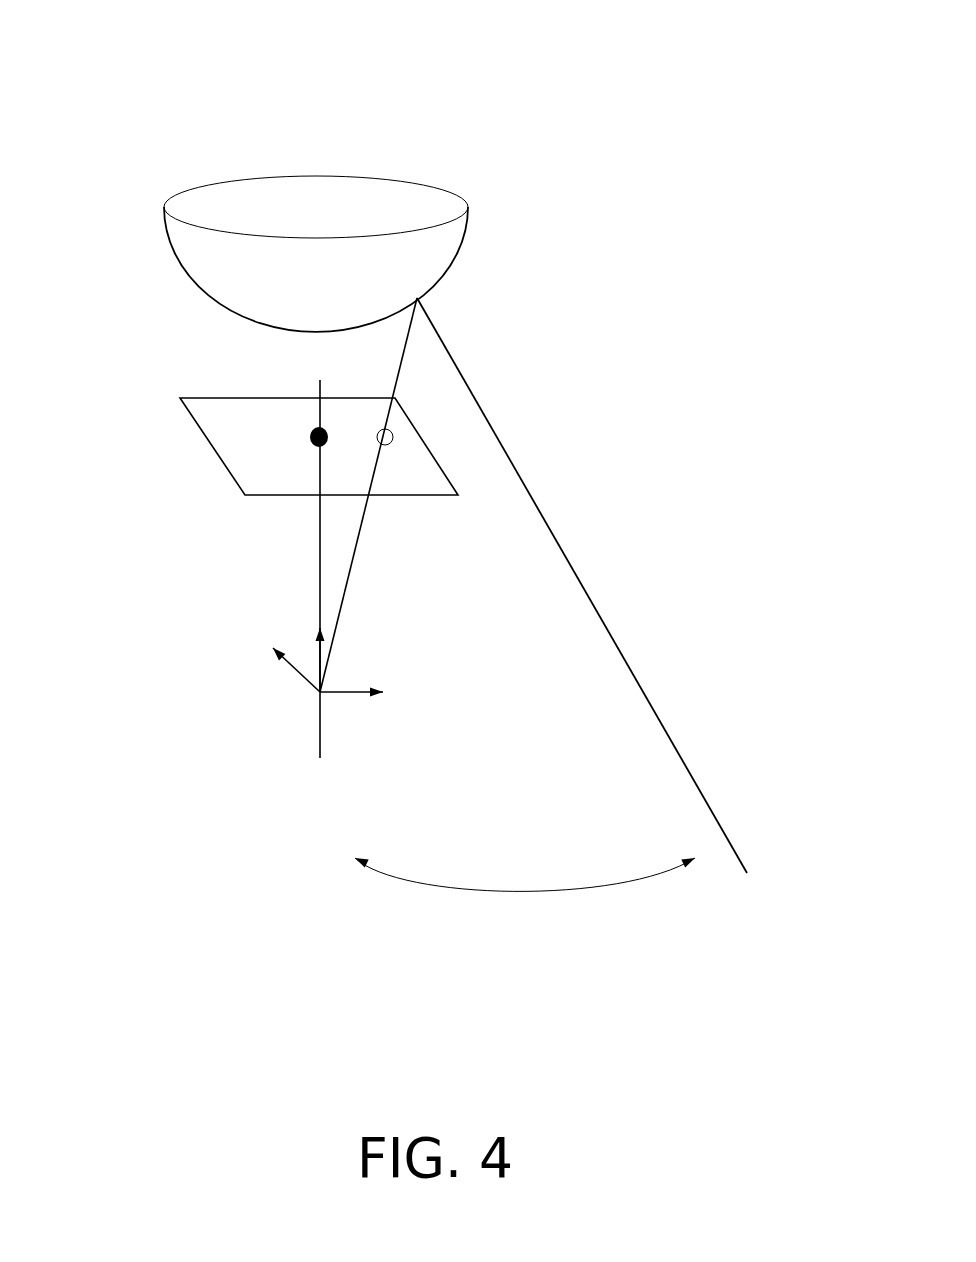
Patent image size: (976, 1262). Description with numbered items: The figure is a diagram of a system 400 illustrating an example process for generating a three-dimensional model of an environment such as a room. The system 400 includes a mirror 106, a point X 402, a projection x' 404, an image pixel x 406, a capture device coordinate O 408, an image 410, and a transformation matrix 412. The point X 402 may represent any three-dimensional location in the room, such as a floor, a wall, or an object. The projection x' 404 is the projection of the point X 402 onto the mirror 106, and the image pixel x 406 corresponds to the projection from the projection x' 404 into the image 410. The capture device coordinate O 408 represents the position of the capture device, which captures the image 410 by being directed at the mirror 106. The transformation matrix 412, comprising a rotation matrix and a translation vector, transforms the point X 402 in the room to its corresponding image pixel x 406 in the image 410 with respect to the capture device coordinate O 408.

The system 400 is at (108, 53).
The mirror 106 is at (418, 205).
The projection x' 404 is at (433, 268).
The image pixel x 406 is at (408, 443).
The image π1 410 is at (255, 513).
The capture device coordinate O 408 is at (363, 745).
The transformation matrix Q(R,t) 412 is at (525, 839).
The point X 402 is at (779, 890).